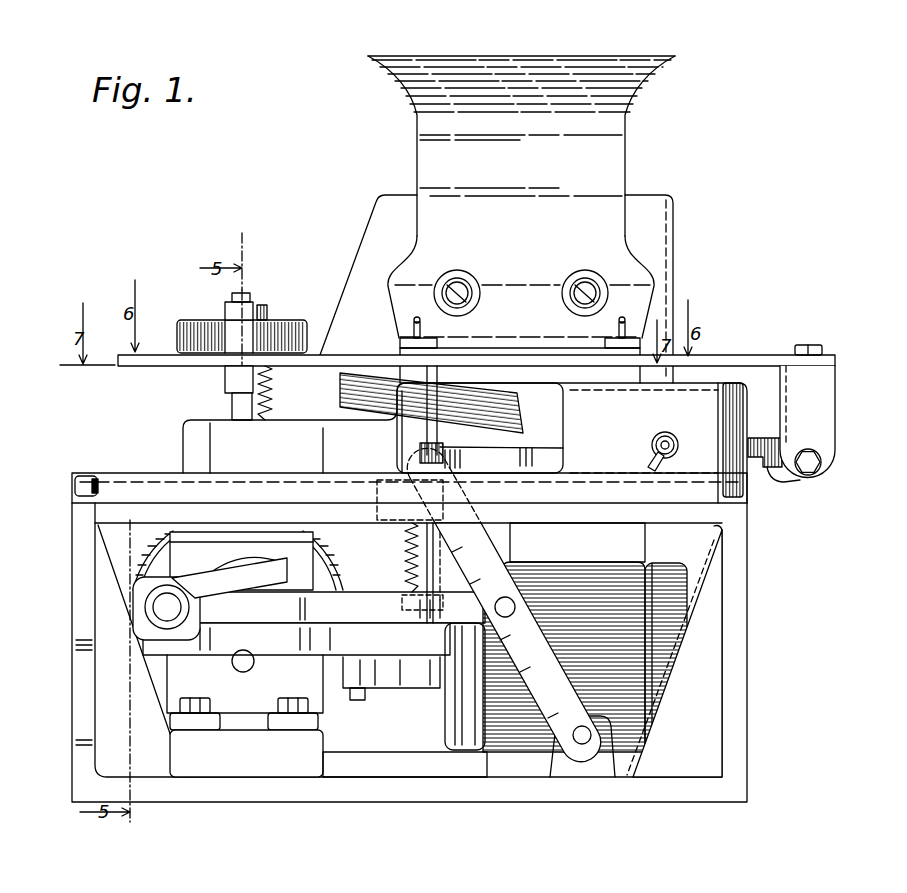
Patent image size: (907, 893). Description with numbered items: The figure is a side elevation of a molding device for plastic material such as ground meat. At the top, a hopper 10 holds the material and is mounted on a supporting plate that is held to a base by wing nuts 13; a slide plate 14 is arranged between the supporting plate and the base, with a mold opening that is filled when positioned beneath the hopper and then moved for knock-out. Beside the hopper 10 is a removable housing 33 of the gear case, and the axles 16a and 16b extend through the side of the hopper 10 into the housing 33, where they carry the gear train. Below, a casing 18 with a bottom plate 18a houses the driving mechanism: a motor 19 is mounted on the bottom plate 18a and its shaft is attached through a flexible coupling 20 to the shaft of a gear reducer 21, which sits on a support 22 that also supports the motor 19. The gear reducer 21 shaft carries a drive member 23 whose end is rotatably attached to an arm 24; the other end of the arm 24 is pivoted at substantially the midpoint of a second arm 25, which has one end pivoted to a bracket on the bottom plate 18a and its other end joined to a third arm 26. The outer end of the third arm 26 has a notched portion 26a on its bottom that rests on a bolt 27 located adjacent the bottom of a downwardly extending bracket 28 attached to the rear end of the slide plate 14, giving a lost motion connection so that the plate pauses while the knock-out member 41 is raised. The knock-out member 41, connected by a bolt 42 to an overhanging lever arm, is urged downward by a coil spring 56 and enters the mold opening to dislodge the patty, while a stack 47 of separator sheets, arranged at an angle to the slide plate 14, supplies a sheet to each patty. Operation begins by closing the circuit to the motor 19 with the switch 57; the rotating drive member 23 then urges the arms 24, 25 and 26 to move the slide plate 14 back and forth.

The hopper 10 is at (600, 153).
The removable housing 33 is at (672, 222).
The axle 16a is at (447, 290).
The axle 16b is at (593, 290).
The wing nuts 13 is at (405, 320).
The slide plate 14 is at (750, 358).
The knock-out member 41 is at (277, 323).
The bolt 42 is at (247, 298).
The stack of separator sheets 47 is at (340, 392).
The coil spring 56 is at (268, 402).
The third arm 26 is at (752, 472).
The notched portion 26a is at (772, 470).
The downwardly extending bracket 28 is at (820, 390).
The bolt 27 is at (812, 462).
The switch 57 is at (658, 443).
The casing 18 is at (737, 622).
The bottom plate 18a is at (567, 746).
The motor 19 is at (657, 577).
The drive member 23 is at (257, 578).
The arm 24 is at (363, 607).
The second arm 25 is at (470, 552).
The gear reducer 21 is at (297, 683).
The support 22 is at (402, 760).
The flexible coupling 20 is at (413, 688).